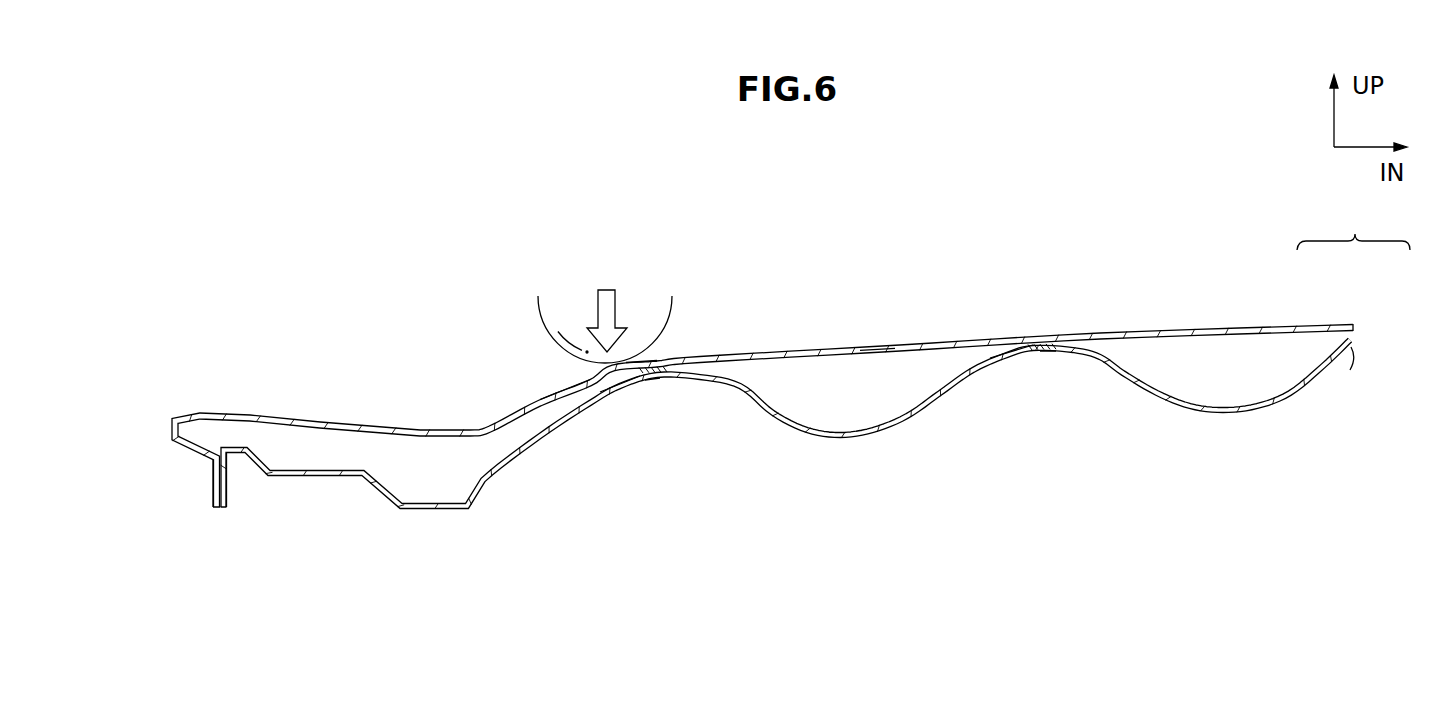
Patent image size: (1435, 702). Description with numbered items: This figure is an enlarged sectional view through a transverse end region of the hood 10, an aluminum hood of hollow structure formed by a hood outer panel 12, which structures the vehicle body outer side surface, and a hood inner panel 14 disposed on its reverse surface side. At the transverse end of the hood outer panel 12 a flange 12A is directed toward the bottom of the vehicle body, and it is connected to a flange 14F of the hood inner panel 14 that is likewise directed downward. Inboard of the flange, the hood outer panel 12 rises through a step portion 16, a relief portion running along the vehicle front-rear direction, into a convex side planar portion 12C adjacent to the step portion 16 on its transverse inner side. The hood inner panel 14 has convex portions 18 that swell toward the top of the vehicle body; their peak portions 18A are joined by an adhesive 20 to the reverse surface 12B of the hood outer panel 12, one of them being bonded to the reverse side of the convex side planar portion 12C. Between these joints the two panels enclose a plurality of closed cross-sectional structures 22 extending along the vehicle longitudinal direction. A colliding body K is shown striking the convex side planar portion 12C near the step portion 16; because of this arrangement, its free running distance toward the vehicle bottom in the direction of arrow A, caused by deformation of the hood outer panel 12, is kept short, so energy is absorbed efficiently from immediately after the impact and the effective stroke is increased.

The hood 10 is at (1353, 228).
The hood outer panel 12 is at (1286, 314).
The flange 12A is at (212, 489).
The reverse surface 12B is at (877, 362).
The convex side planar portion 12C is at (637, 355).
The hood inner panel 14 is at (1330, 394).
The flange 14F is at (228, 490).
The step portion 16 is at (549, 400).
The convex portion 18 is at (627, 393).
The peak portion 18A is at (652, 378).
The adhesive 20 is at (658, 364).
The closed cross-sectional structure 22 is at (828, 401).
The colliding body K is at (547, 328).
The arrow A is at (598, 312).